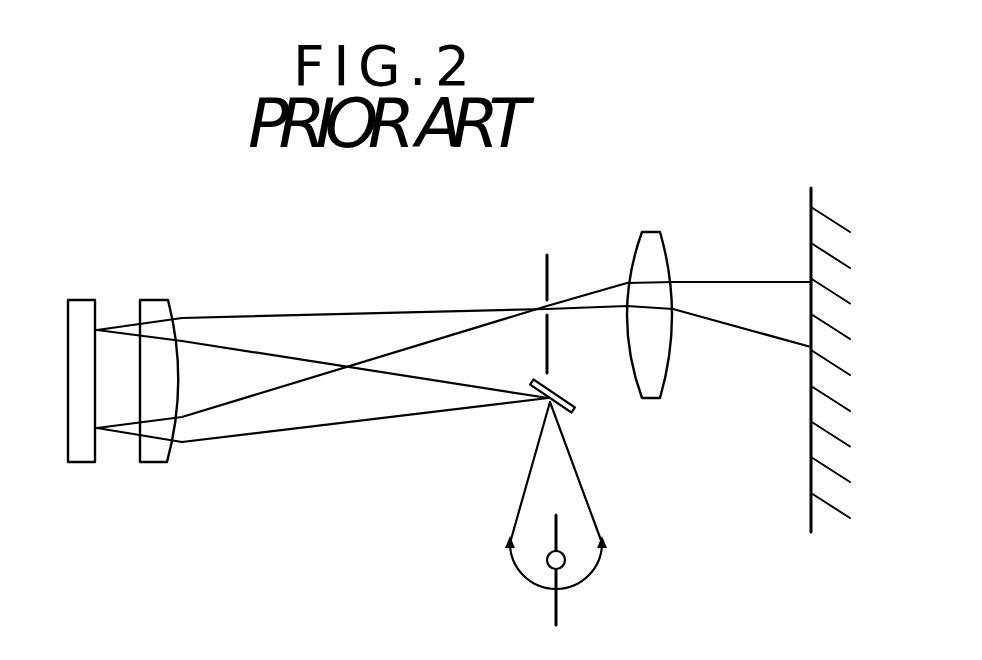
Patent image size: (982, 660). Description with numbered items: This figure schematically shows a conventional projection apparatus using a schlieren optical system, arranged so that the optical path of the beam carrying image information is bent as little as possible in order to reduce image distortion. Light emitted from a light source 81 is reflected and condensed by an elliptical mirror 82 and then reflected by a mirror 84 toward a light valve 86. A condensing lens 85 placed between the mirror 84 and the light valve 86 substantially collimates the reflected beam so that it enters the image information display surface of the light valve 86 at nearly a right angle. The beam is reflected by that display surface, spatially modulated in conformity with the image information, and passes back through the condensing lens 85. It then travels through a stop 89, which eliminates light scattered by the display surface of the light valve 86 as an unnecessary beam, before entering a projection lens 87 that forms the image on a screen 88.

The light source 81 is at (560, 602).
The elliptical mirror 82 is at (604, 545).
The mirror 84 is at (527, 398).
The condensing lens 85 is at (155, 300).
The light valve 86 is at (83, 300).
The projection lens 87 is at (648, 250).
The screen 88 is at (807, 228).
The stop 89 is at (545, 288).